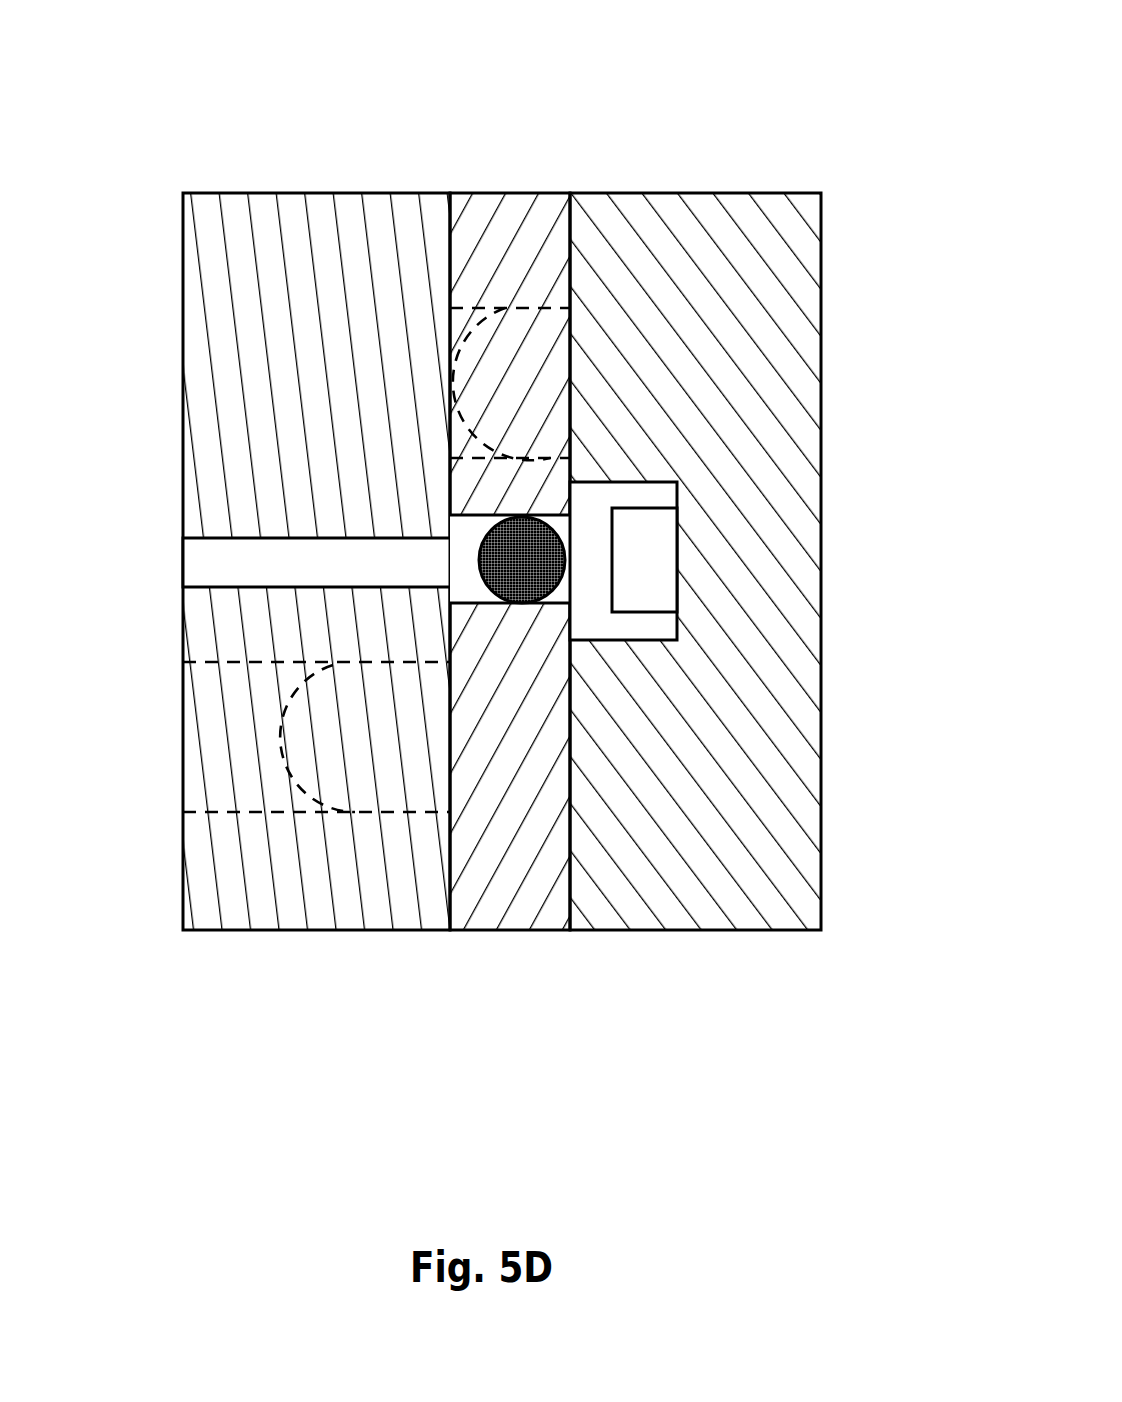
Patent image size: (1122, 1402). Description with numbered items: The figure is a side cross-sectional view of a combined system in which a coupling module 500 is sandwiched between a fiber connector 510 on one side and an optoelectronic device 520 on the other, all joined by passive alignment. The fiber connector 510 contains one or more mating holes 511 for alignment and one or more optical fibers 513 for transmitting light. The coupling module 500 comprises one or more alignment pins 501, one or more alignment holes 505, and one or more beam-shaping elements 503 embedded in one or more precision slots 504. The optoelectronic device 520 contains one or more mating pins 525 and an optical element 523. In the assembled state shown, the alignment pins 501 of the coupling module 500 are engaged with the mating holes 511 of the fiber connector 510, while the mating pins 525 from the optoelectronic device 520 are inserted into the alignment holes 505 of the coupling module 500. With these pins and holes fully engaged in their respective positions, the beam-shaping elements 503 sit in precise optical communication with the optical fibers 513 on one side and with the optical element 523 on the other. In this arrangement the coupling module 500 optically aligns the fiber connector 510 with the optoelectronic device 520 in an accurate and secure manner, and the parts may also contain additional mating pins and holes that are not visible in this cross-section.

The coupling module 500 is at (565, 950).
The alignment pin 501 is at (287, 757).
The beam-shaping element 503 is at (521, 548).
The precision slot 504 is at (463, 566).
The alignment hole 505 is at (565, 305).
The fiber connector 510 is at (443, 950).
The mating hole 511 is at (210, 665).
The optical fiber 513 is at (215, 565).
The optoelectronic device 520 is at (820, 950).
The optical element 523 is at (660, 582).
The mating pin 525 is at (488, 320).